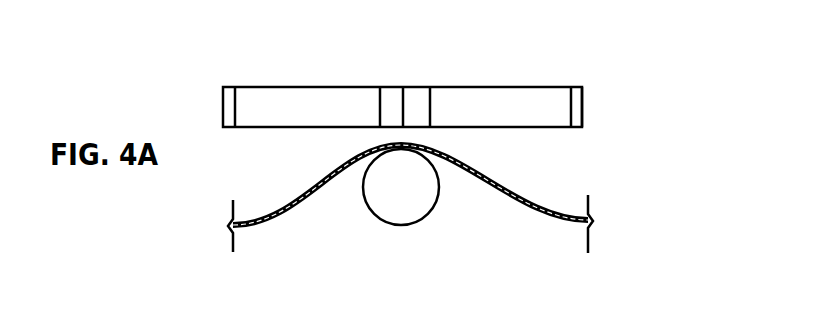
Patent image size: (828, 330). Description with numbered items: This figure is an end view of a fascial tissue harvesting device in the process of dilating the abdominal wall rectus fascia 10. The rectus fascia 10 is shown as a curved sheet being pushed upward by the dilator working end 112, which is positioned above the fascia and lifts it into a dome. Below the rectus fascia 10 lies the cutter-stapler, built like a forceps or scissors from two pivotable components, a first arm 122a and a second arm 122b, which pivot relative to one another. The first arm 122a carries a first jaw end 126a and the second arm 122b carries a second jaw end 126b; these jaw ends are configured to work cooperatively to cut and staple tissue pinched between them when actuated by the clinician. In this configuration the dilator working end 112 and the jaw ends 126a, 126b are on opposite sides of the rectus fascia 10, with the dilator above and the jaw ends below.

The rectus fascia 10 is at (308, 195).
The dilator working end 112 is at (422, 220).
The first arm 122a is at (223, 92).
The second arm 122b is at (582, 103).
The first jaw end 126a is at (306, 90).
The second jaw end 126b is at (538, 87).